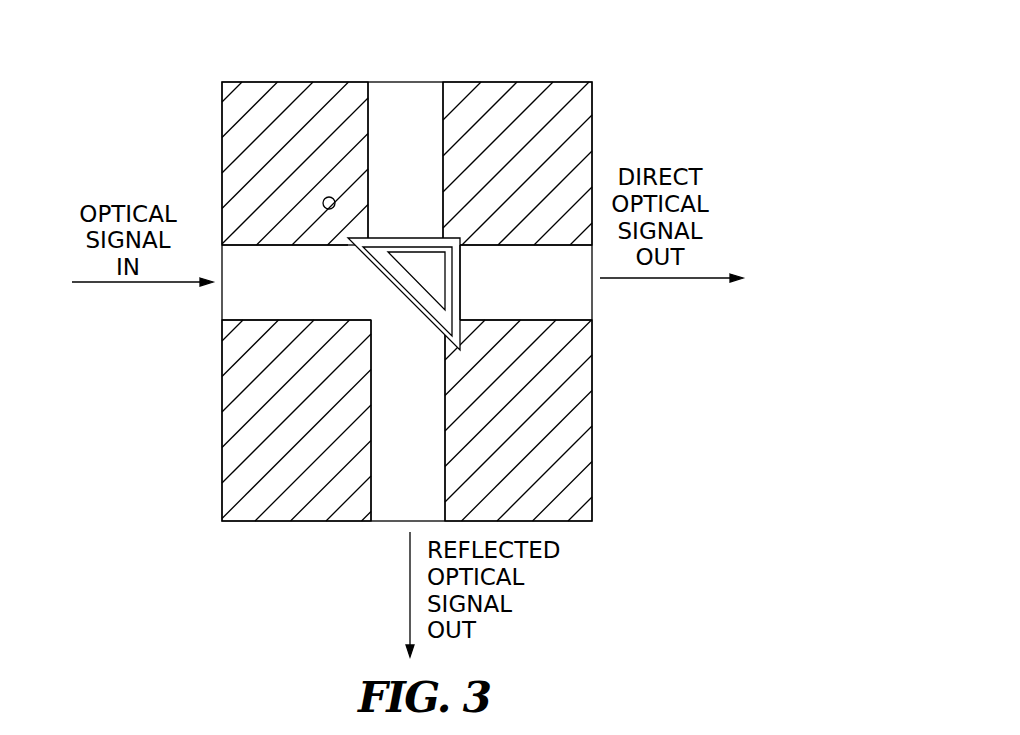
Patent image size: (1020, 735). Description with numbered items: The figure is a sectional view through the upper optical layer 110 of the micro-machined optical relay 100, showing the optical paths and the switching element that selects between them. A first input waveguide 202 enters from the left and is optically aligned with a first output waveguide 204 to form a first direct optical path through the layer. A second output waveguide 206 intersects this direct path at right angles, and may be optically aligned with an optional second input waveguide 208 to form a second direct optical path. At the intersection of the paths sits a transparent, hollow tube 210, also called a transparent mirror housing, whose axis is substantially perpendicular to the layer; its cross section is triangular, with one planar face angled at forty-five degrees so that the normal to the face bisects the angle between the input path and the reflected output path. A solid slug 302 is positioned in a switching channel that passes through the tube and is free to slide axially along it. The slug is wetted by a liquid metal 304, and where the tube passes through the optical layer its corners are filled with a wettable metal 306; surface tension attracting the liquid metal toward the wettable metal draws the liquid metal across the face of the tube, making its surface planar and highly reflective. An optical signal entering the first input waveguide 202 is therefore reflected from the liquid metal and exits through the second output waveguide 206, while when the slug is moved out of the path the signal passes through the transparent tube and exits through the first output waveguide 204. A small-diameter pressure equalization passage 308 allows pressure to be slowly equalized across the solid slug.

The optical relay 100 is at (228, 52).
The upper optical layer 110 is at (240, 388).
The first input waveguide 202 is at (240, 298).
The first output waveguide 204 is at (573, 298).
The second output waveguide 206 is at (388, 508).
The second input waveguide 208 is at (405, 98).
The transparent hollow tube 210 is at (457, 290).
The solid slug 302 is at (420, 272).
The liquid metal 304 is at (445, 253).
The wettable metal 306 is at (372, 262).
The pressure equalization passage 308 is at (324, 198).